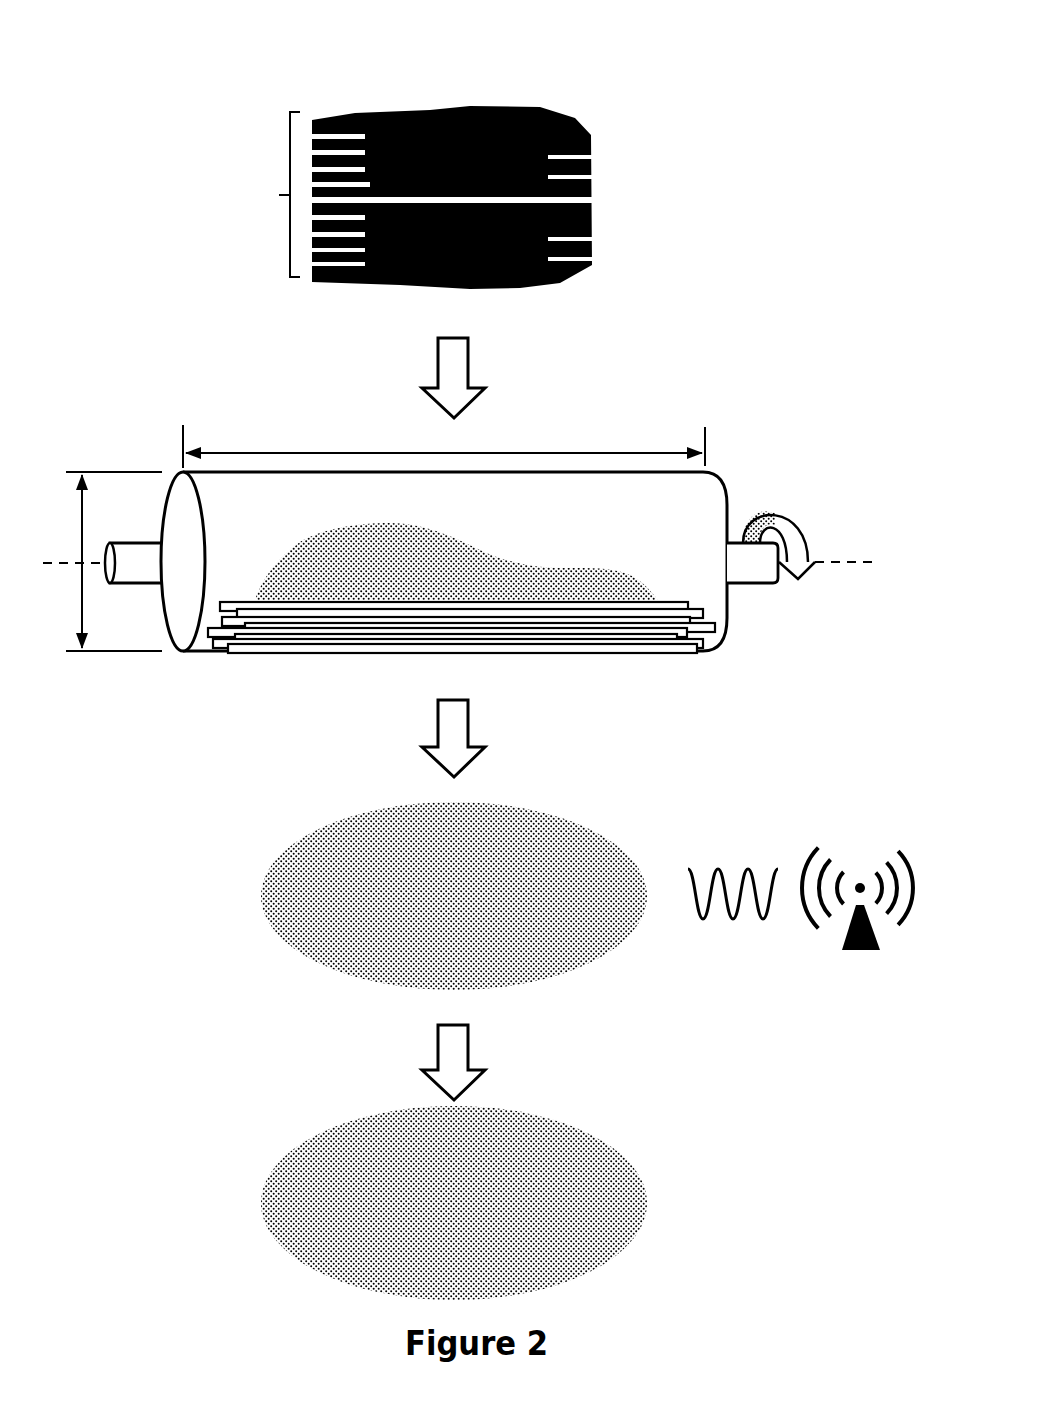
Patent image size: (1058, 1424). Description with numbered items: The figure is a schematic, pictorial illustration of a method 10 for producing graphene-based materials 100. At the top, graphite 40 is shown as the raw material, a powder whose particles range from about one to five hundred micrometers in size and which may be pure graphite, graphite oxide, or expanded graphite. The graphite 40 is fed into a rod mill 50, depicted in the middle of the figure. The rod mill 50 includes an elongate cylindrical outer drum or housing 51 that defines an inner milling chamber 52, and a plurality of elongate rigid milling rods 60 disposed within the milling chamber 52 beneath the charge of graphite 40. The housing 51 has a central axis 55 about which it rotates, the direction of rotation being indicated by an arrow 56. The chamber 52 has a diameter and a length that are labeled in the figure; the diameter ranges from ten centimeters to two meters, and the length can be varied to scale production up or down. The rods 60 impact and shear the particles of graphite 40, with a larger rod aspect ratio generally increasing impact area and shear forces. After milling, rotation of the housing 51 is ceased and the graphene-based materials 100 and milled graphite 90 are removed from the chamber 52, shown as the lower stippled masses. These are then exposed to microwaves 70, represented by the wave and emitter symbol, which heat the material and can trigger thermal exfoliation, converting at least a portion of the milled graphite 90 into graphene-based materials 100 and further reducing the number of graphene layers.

The method 10 is at (752, 61).
The graphite 40 is at (612, 526).
The rod mill 50 is at (135, 455).
The outer drum or housing 51 is at (719, 490).
The inner milling chamber 52 is at (267, 534).
The central axis 55 is at (853, 560).
The arrow 56 is at (779, 528).
The milling rods 60 is at (545, 610).
The microwaves 70 is at (747, 859).
The milled graphite 90 is at (246, 841).
The graphene-based materials 100 is at (261, 1139).